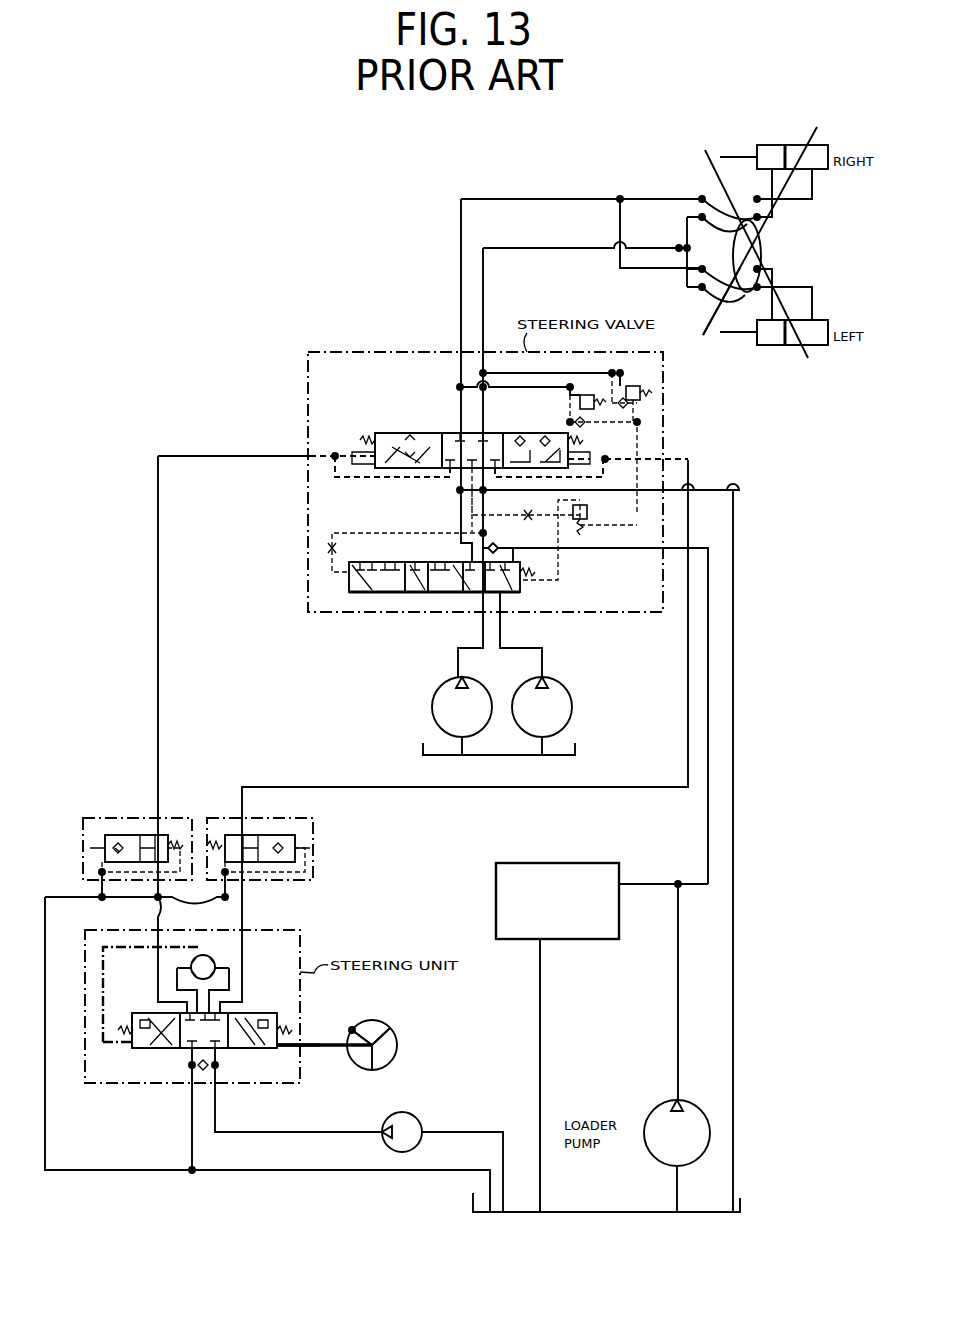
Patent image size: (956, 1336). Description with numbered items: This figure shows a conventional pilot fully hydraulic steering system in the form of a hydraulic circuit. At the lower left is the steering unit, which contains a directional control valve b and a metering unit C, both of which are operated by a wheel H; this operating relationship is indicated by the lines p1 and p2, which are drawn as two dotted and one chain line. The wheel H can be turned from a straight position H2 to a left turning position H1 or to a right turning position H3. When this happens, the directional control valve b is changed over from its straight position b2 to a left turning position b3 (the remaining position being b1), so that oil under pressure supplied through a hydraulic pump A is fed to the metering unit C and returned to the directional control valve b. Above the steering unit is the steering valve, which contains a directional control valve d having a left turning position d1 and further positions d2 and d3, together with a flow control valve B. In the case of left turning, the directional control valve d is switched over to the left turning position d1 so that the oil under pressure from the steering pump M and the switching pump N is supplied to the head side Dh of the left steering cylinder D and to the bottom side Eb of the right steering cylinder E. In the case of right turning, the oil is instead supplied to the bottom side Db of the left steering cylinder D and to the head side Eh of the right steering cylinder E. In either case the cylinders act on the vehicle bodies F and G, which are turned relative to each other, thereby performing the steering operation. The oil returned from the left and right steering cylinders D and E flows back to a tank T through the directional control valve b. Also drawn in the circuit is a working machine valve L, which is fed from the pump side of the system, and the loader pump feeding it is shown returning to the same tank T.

The directional control valve d is at (375, 433).
The left turning position d1 is at (438, 433).
The second valve position d2 is at (492, 433).
The third valve position d3 is at (518, 433).
The flow control valve B is at (350, 594).
The steering pump M is at (432, 703).
The switching pump N is at (572, 703).
The right steering cylinder E is at (817, 127).
The head side Eh is at (767, 147).
The bottom side Eb is at (814, 168).
The left steering cylinder D is at (816, 312).
The head side Dh is at (758, 345).
The bottom side Db is at (818, 345).
The vehicle body F is at (703, 335).
The vehicle body G is at (808, 358).
The metering unit C is at (209, 959).
The directional control valve b is at (254, 1013).
The steering valve left position b1 is at (140, 1048).
The straight position b2 is at (224, 1048).
The left turning position b3 is at (256, 1048).
The pilot line p1 is at (106, 1001).
The pilot line p2 is at (335, 1056).
The wheel H is at (397, 1046).
The left turning position H1 is at (341, 1036).
The straight position H2 is at (358, 1014).
The right turning position H3 is at (378, 1022).
The hydraulic pump A is at (405, 1114).
The working machine valve L is at (560, 863).
The tank T is at (743, 1208).